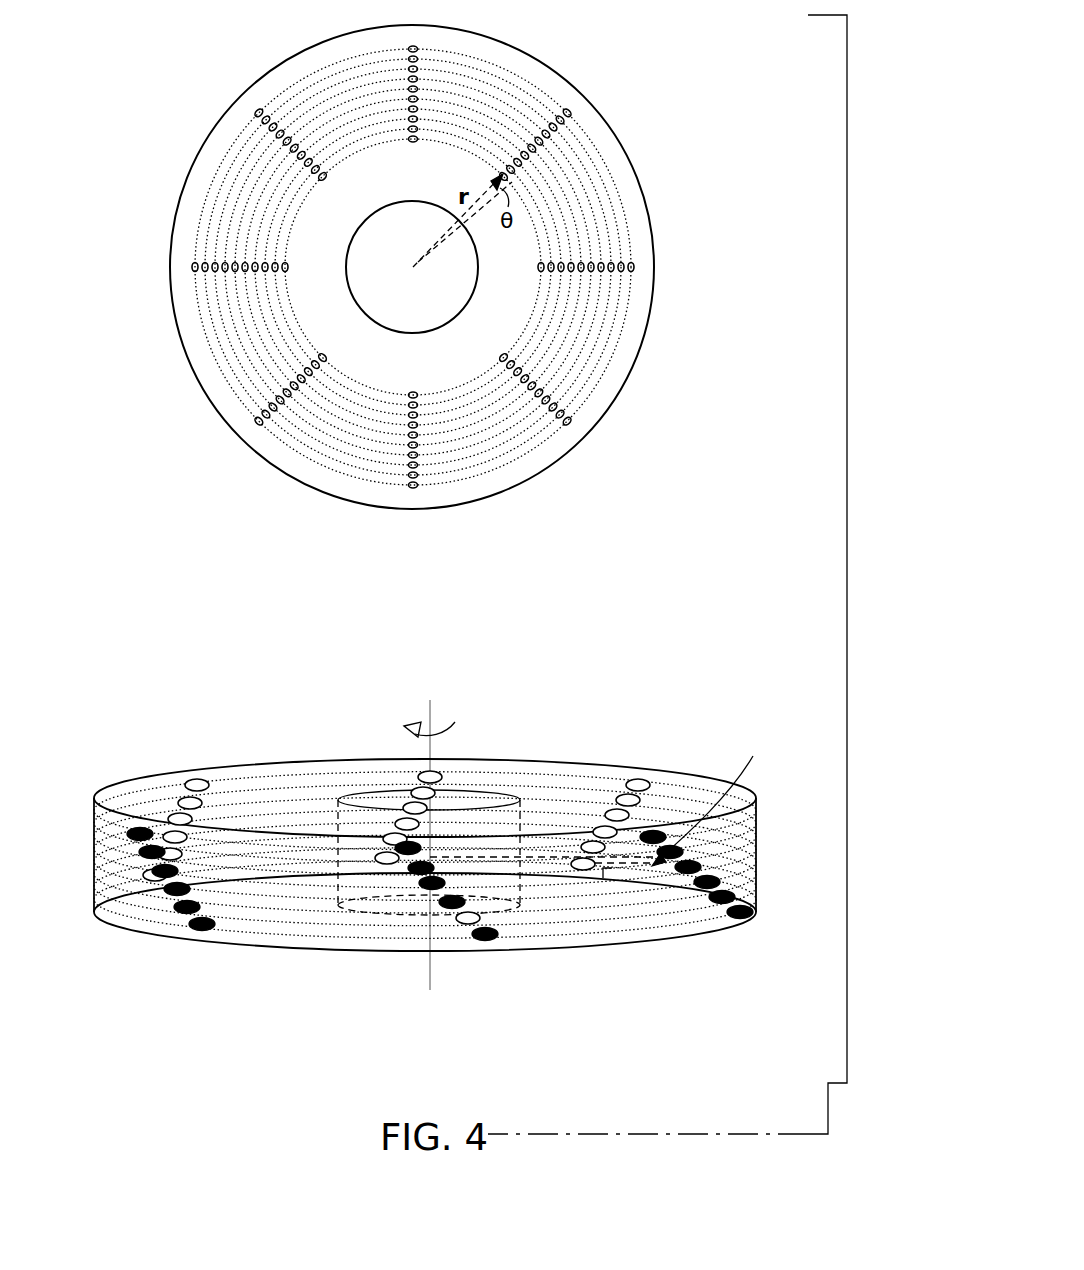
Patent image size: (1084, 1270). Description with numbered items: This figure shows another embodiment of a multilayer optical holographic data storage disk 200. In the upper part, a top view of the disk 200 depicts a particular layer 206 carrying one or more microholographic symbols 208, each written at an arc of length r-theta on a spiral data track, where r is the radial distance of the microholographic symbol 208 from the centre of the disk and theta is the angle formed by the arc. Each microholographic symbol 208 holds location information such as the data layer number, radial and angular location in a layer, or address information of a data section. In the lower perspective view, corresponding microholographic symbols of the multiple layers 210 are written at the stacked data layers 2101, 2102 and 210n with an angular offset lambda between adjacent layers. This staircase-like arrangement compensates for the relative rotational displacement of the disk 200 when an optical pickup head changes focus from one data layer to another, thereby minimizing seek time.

The multilayer optical holographic data storage disk 200 is at (148, 661).
The layer 206 is at (548, 65).
The microholographic symbol 208 is at (634, 267).
The multiple layers 210 is at (475, 878).
The data layer 210n is at (742, 814).
The data layer 2102 is at (742, 898).
The data layer 2101 is at (725, 923).